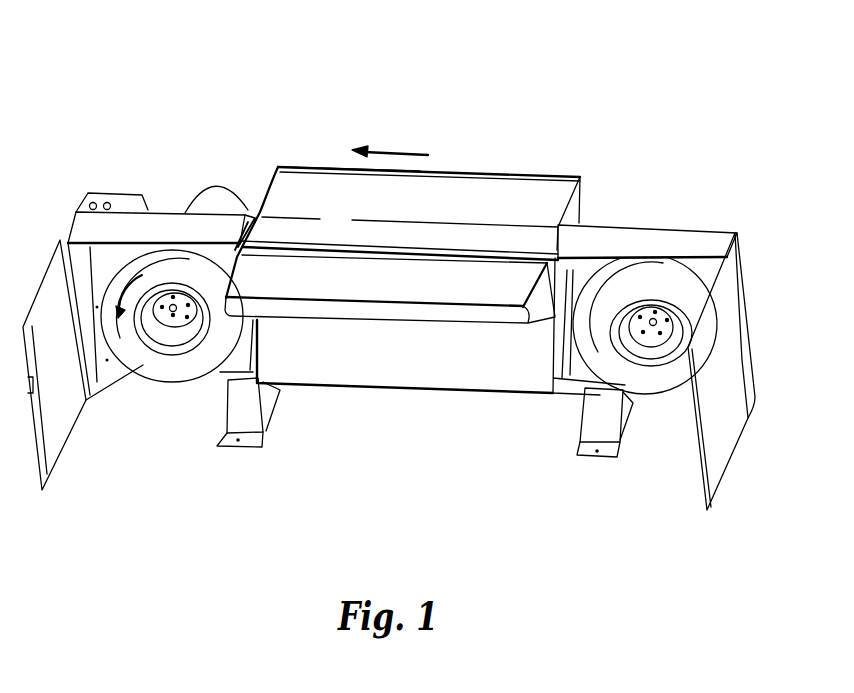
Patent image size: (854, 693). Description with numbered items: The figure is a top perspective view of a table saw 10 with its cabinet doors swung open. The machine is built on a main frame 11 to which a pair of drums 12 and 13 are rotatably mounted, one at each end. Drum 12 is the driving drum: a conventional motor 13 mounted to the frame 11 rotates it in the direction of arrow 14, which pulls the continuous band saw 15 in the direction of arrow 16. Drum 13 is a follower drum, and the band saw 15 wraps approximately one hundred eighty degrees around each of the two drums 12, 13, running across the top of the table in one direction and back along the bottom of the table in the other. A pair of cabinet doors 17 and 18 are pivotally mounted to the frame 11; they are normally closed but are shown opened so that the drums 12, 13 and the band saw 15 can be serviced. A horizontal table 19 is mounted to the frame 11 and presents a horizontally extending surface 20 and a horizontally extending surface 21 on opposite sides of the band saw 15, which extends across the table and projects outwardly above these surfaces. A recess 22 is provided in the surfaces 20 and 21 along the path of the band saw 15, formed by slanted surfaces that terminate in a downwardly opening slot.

The table saw 10 is at (610, 109).
The main frame 11 is at (252, 412).
The drum 12 is at (168, 366).
The drum 13 is at (206, 203).
The arrow 14 is at (132, 277).
The continuous band saw 15 is at (432, 247).
The arrow 16 is at (399, 150).
The cabinet door 17 is at (45, 388).
The cabinet door 18 is at (720, 353).
The horizontal table 19 is at (301, 170).
The horizontally extending surface 20 is at (331, 182).
The horizontally extending surface 21 is at (403, 279).
The recess 22 is at (527, 240).